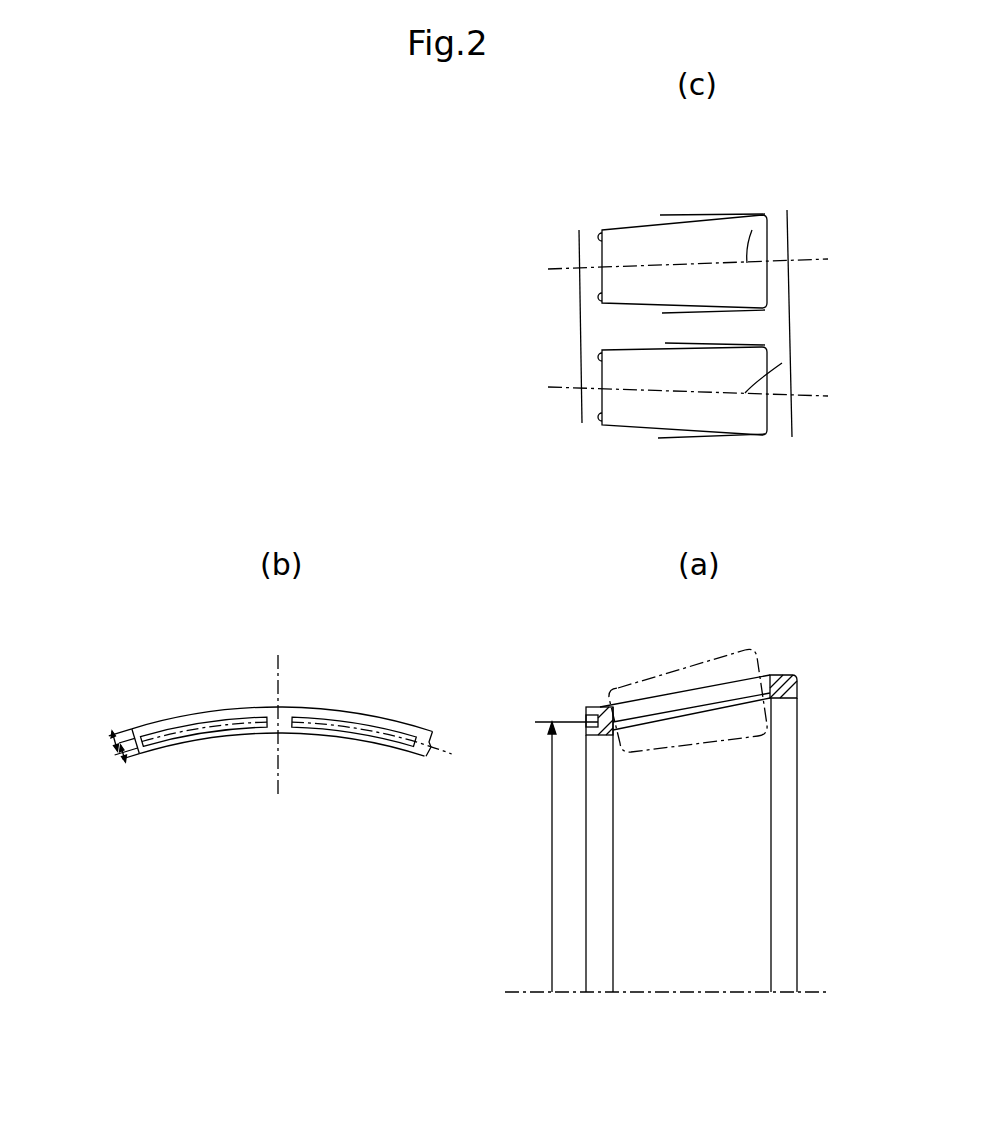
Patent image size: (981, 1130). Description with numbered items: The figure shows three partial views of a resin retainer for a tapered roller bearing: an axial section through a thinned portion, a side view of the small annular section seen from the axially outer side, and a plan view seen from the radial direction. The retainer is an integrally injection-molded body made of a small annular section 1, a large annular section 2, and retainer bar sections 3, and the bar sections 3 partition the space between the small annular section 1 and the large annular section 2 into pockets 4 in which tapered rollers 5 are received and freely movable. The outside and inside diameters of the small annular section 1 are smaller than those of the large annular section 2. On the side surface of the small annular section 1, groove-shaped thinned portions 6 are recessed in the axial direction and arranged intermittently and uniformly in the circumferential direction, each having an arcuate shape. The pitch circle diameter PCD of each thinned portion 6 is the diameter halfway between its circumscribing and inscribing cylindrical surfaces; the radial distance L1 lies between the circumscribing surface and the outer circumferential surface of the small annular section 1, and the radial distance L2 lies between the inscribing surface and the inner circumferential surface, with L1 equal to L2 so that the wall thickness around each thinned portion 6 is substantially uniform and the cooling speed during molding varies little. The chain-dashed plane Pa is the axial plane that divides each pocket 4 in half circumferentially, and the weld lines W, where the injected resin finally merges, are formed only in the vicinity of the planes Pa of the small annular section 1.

The small annular section 1 is at (590, 357).
The large annular section 2 is at (785, 408).
The retainer bar section 3 is at (727, 328).
The pocket 4 is at (710, 240).
The tapered roller 5 is at (763, 663).
The thinned portion 6 is at (202, 731).
The plane Pa is at (765, 213).
The weld line W is at (595, 267).
The pitch circle diameter PCD is at (467, 710).
The radial distance L1 is at (110, 739).
The radial distance L2 is at (115, 763).